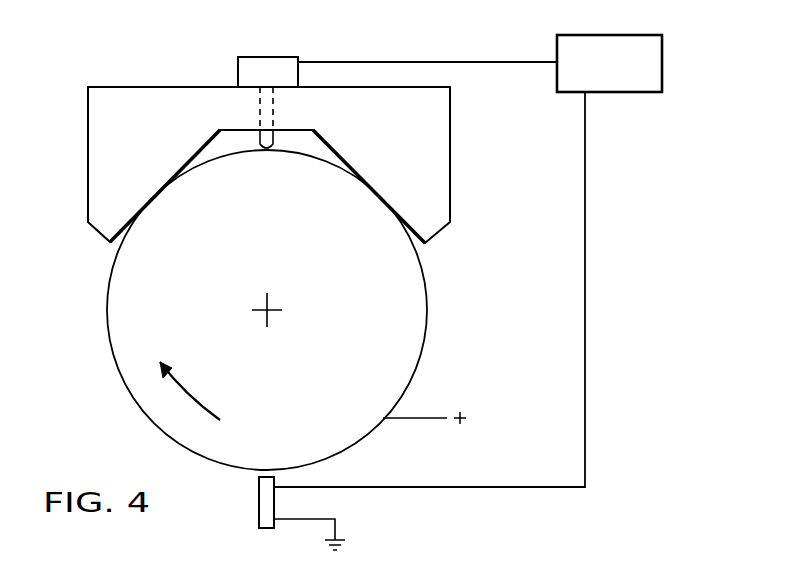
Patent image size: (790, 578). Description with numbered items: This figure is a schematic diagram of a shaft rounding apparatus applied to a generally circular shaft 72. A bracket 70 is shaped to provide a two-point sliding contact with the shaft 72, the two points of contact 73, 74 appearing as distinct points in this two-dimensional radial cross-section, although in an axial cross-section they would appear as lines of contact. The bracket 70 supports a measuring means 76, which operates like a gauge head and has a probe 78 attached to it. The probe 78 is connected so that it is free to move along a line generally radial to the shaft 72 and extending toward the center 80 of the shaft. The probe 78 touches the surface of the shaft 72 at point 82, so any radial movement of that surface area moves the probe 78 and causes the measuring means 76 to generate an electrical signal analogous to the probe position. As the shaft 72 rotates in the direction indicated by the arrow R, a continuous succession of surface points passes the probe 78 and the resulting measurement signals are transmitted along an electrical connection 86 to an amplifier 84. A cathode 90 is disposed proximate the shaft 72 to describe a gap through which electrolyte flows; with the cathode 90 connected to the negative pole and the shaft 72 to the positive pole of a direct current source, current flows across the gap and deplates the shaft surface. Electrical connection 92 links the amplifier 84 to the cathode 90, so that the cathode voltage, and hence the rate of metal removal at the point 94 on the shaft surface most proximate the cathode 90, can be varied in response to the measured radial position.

The bracket 70 is at (88, 146).
The shaft 72 is at (418, 337).
The point of contact 73 is at (153, 200).
The point of contact 74 is at (373, 200).
The measuring means 76 is at (238, 69).
The probe 78 is at (274, 137).
The center of the shaft 80 is at (268, 307).
The point 82 is at (267, 150).
The amplifier 84 is at (572, 35).
The electrical connection 86 is at (398, 62).
The cathode 90 is at (265, 498).
The electrical connection 92 is at (585, 270).
The point 94 is at (267, 475).